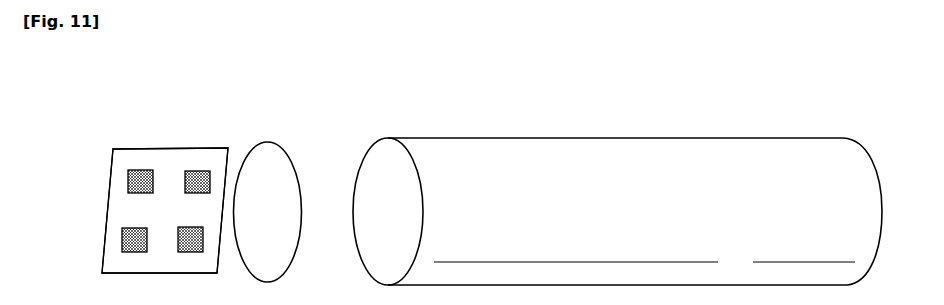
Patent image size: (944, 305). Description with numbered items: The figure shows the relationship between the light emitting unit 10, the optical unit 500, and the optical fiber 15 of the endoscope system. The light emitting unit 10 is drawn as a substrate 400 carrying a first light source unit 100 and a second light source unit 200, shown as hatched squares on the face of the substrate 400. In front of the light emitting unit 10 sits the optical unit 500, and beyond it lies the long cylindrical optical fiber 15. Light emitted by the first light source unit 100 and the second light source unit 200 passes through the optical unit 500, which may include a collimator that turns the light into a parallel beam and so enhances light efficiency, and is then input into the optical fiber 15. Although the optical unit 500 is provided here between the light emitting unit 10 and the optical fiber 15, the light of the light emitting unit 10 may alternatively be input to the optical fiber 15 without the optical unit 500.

The light emitting unit 10 is at (127, 132).
The optical fiber 15 is at (653, 137).
The first light source unit 100 is at (128, 182).
The second light source unit 200 is at (122, 238).
The substrate 400 is at (195, 148).
The optical unit 500 is at (268, 142).